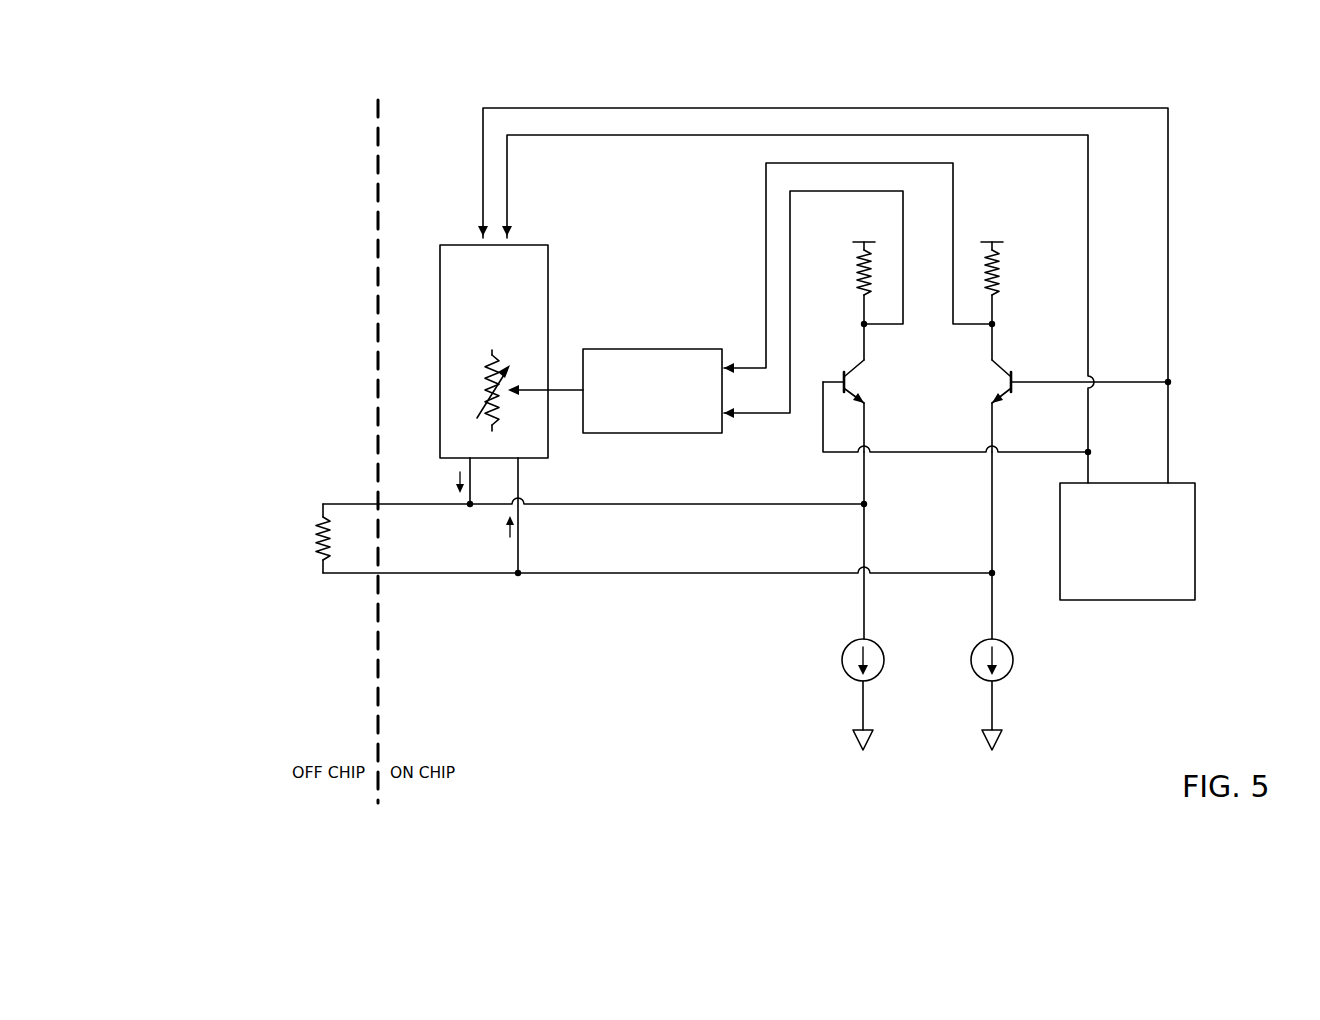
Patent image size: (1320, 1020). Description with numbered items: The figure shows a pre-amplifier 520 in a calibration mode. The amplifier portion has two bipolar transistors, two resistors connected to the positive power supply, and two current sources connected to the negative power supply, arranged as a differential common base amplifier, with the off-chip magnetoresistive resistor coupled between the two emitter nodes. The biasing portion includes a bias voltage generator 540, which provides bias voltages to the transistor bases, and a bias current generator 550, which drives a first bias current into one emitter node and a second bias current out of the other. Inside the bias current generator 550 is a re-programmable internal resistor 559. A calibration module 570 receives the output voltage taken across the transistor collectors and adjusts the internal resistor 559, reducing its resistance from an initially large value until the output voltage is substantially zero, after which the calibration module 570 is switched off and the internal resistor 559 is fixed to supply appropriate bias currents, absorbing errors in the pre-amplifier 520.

The pre-amplifier 520 is at (1225, 143).
The bias current generator 550 is at (535, 351).
The internal resistor R_PRG 559 is at (492, 353).
The calibration module 570 is at (615, 391).
The bias voltage generator 540 is at (1127, 541).